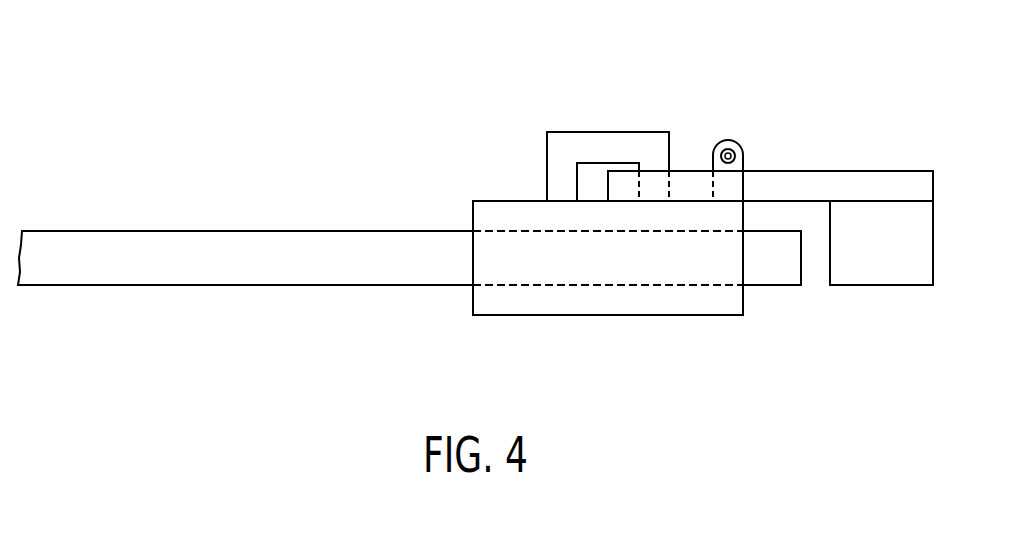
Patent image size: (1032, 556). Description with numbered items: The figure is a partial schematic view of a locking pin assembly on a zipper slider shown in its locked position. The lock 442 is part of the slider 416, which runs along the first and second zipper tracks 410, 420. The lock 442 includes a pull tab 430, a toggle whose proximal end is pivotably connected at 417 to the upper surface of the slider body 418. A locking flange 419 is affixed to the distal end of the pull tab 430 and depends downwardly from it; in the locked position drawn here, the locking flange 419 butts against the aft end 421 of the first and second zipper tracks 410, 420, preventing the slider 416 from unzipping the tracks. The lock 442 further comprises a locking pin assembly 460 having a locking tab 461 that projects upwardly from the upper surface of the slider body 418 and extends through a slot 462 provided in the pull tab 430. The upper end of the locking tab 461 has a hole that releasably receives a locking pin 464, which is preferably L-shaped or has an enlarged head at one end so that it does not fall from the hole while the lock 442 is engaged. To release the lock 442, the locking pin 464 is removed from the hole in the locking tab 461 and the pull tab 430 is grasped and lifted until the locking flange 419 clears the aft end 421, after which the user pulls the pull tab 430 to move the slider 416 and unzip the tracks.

The first zipper track 410 is at (245, 224).
The second zipper track 420 is at (257, 231).
The aft end 421 is at (801, 270).
The slider 416 is at (598, 324).
The pivotable connection 417 is at (606, 182).
The slider body 418 is at (532, 315).
The locking flange 419 is at (880, 286).
The pull tab 430 is at (883, 170).
The lock 442 is at (600, 84).
The locking pin assembly 460 is at (783, 181).
The locking tab 461 is at (747, 149).
The slot 462 is at (745, 185).
The locking pin 464 is at (721, 149).